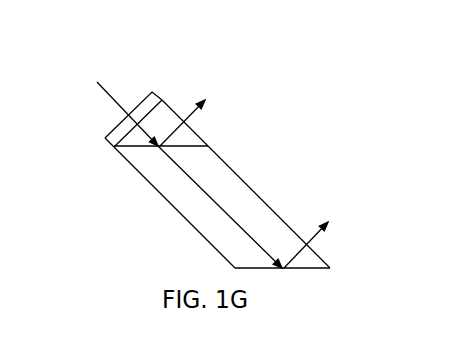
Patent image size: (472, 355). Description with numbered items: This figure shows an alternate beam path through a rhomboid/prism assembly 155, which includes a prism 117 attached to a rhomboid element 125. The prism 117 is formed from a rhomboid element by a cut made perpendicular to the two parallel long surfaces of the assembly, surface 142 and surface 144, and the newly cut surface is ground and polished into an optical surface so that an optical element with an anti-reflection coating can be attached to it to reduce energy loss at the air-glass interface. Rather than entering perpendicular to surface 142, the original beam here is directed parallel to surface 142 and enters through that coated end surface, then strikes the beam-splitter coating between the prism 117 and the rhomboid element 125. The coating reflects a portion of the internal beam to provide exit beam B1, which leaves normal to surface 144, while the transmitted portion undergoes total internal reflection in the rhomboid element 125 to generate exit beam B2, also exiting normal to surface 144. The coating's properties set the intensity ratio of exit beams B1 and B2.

The prism 117 is at (162, 122).
The rhomboid element 125 is at (263, 213).
The surface 142 is at (177, 210).
The surface 144 is at (218, 155).
The rhomboid/prism assembly 155 is at (318, 130).
The exit beam B1 is at (193, 111).
The exit beam B2 is at (317, 233).